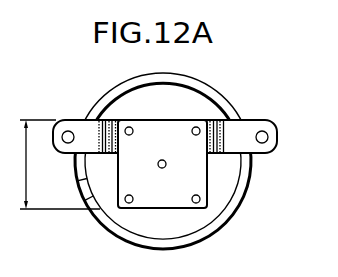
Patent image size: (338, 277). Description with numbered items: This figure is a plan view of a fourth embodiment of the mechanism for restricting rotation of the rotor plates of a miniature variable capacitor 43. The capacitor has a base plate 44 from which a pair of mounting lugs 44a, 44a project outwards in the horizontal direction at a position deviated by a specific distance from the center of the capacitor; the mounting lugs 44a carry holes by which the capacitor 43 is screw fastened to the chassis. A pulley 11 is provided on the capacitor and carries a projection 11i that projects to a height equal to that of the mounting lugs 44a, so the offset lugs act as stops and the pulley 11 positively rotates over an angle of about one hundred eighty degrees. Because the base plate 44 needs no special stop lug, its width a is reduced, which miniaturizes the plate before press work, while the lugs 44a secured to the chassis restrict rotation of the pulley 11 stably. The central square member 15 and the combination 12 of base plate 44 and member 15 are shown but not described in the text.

The miniature variable capacitor 43 is at (237, 72).
The pulley 11 is at (230, 98).
The projection 11i is at (80, 190).
The mounting member 12 is at (297, 167).
The base plate 44 is at (258, 157).
The mounting lugs 44a is at (76, 118).
The mounting plate 15 is at (208, 190).
The width of base plate a is at (60, 164).